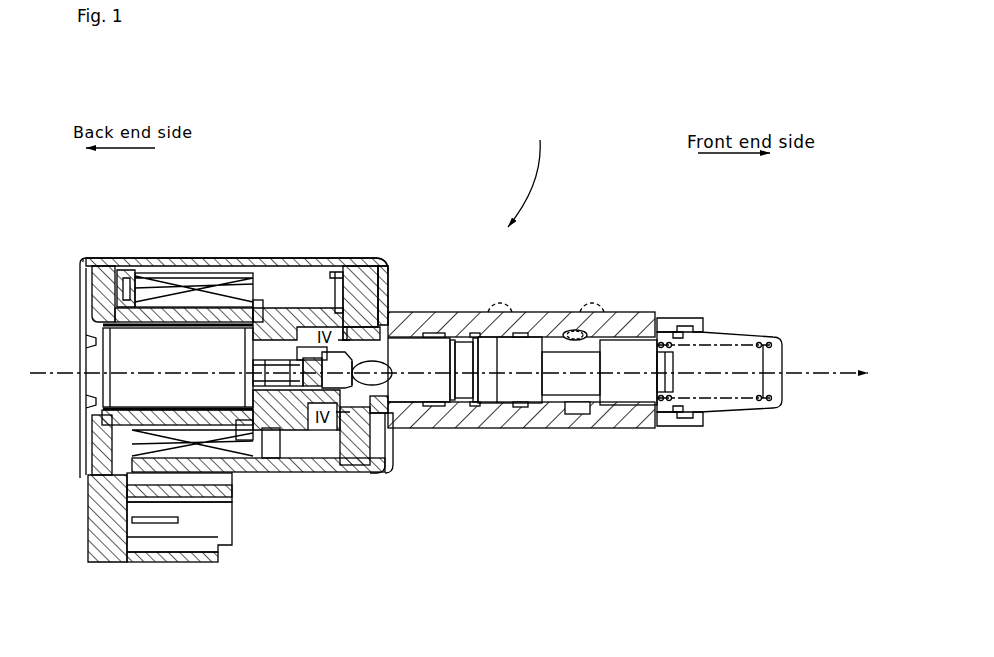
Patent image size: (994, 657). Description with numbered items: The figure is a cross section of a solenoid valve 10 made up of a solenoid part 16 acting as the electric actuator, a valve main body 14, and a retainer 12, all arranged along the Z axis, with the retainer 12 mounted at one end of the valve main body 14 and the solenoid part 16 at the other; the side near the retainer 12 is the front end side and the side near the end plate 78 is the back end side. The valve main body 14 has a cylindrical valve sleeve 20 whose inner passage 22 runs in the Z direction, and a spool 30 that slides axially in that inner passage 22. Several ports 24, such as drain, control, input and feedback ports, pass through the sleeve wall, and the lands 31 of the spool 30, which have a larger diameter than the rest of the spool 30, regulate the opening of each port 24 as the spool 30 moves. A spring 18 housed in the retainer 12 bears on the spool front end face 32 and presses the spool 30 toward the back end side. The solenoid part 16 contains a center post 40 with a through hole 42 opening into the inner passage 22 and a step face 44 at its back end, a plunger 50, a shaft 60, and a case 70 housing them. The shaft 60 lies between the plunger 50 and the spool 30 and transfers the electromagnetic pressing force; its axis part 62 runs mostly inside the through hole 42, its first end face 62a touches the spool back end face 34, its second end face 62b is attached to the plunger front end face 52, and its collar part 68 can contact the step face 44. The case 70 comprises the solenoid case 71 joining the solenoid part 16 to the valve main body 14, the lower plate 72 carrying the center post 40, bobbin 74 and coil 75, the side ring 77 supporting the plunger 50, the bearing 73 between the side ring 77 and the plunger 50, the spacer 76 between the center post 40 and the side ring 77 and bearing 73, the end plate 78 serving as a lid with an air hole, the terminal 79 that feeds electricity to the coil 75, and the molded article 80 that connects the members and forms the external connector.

The solenoid valve 10 is at (317, 190).
The retainer 12 is at (740, 325).
The valve main body 14 is at (556, 272).
The solenoid part 16 is at (298, 190).
The spring 18 is at (760, 418).
The valve sleeve 20 is at (440, 312).
The inner passage 22 is at (580, 402).
The ports 24 is at (425, 470).
The spool 30 is at (510, 383).
The lands 31 is at (430, 387).
The spool front end face 32 is at (663, 420).
The spool back end face 34 is at (376, 473).
The center post 40 is at (308, 297).
The through hole 42 is at (392, 337).
The step face 44 is at (273, 307).
The plunger 50 is at (175, 350).
The plunger front end face 52 is at (245, 428).
The shaft 60 is at (283, 430).
The axis part 62 is at (312, 430).
The first end face 62a is at (393, 432).
The second end face 62b is at (229, 498).
The collar part 68 is at (270, 430).
The case 70 is at (390, 258).
The solenoid case 71 is at (240, 300).
The lower plate 72 is at (340, 472).
The bearing 73 is at (105, 318).
The bobbin 74 is at (127, 270).
The coil 75 is at (208, 285).
The spacer 76 is at (255, 315).
The side ring 77 is at (95, 288).
The end plate 78 is at (88, 430).
The terminal 79 is at (165, 530).
The molded article 80 is at (108, 545).
The Z axis Z is at (828, 376).